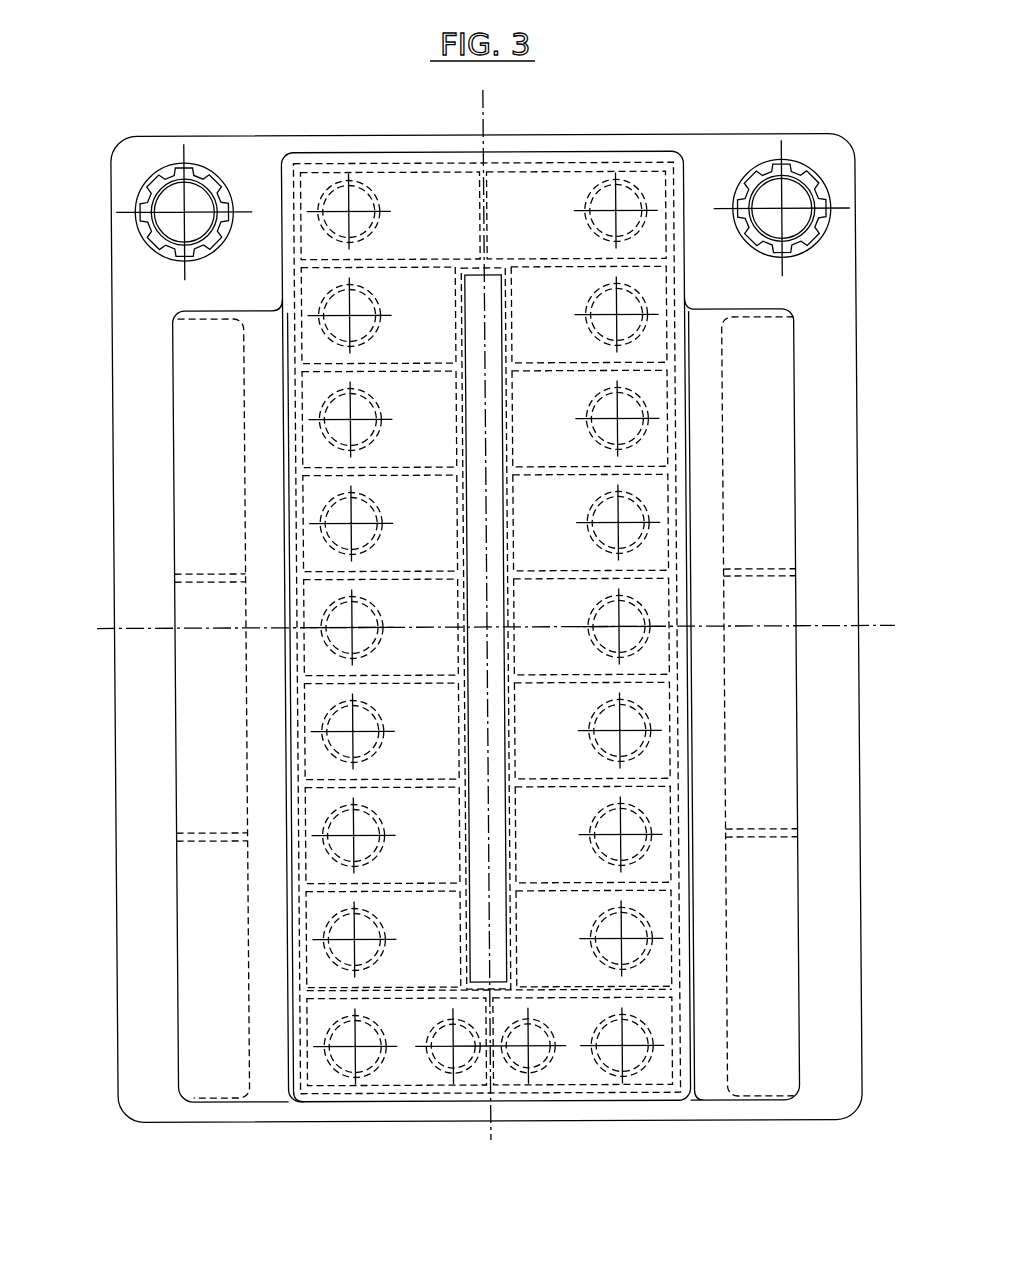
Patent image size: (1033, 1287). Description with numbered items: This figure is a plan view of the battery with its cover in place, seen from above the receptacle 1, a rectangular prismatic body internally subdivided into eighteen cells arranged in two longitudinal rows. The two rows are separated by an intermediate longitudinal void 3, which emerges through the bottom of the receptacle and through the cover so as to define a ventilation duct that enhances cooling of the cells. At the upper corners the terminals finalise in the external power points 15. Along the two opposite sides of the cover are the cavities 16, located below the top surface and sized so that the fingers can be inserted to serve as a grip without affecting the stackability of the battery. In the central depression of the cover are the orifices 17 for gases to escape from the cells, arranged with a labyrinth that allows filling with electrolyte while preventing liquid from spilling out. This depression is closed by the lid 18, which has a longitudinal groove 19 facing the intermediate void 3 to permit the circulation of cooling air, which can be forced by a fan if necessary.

The receptacle 1 is at (856, 338).
The intermediate longitudinal void 3 is at (494, 547).
The external power points 15 is at (174, 196).
The cavities 16 is at (246, 602).
The orifices 17 is at (336, 199).
The lid 18 is at (581, 152).
The longitudinal groove 19 is at (469, 938).